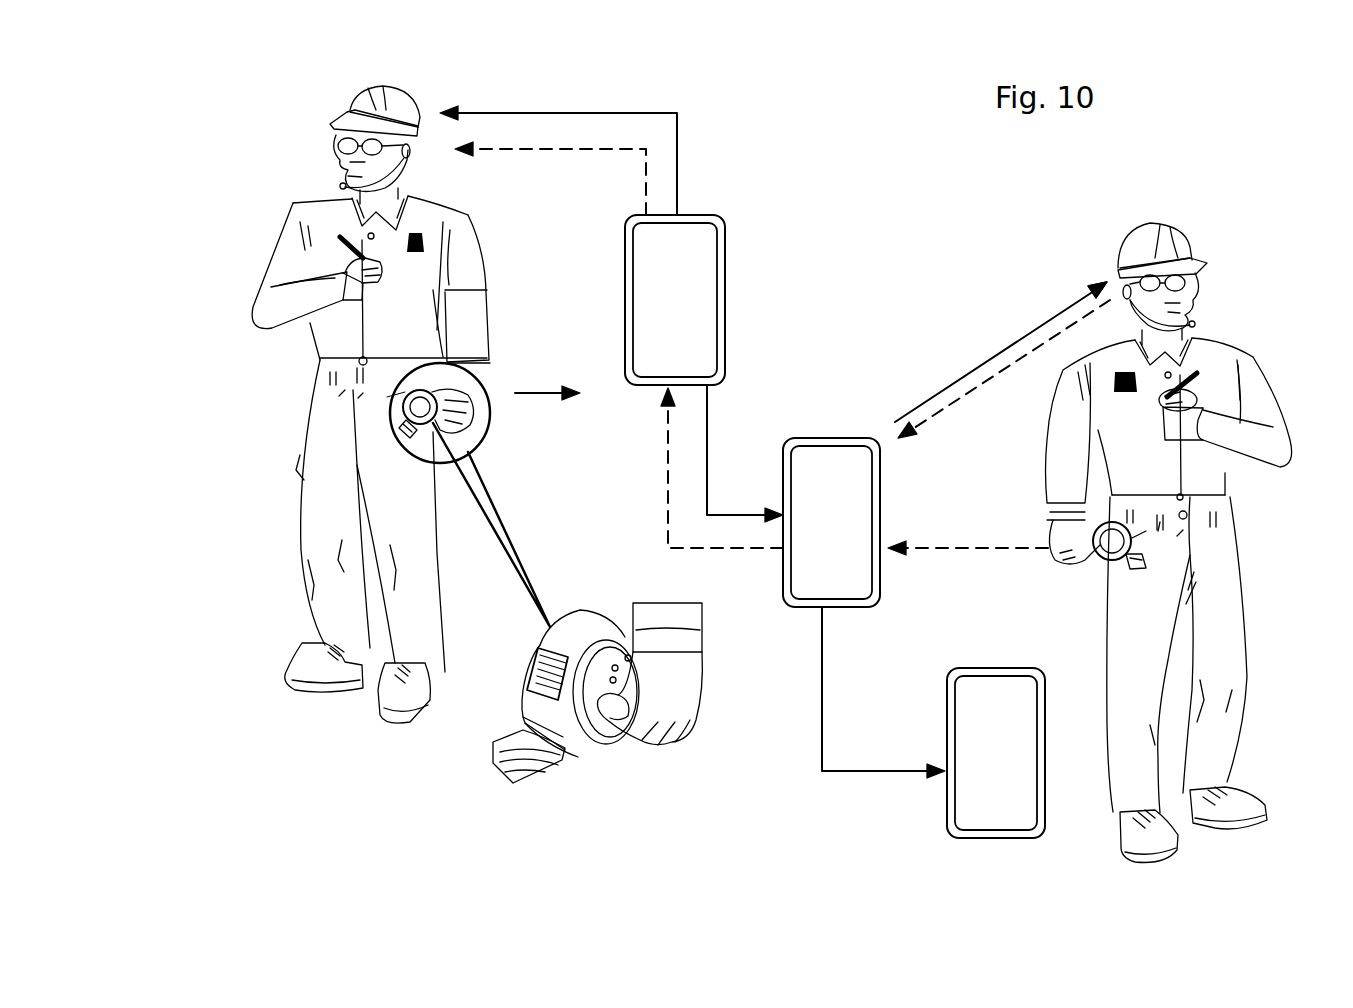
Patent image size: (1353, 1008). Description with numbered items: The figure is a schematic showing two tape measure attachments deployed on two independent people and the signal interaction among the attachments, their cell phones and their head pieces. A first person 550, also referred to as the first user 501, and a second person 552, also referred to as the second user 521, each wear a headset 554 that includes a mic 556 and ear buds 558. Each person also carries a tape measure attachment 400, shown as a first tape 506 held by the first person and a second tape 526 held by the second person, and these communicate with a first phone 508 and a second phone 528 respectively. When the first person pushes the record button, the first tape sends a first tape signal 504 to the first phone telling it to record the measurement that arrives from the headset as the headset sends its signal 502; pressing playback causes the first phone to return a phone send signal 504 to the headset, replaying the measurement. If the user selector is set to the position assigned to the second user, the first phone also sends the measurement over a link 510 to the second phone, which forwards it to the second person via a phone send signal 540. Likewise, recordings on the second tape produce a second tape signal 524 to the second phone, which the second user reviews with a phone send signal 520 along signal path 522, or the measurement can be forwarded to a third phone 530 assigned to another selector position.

The tape measure attachment 400 is at (407, 410).
The first user 501 is at (467, 252).
The headset signal 502 is at (680, 136).
The first tape signal / phone send signal 504 is at (562, 113).
The first tape 506 is at (435, 424).
The first phone 508 is at (708, 300).
The phone-to-phone link 510 is at (709, 440).
The phone send signal 520 is at (973, 393).
The second user 521 is at (1223, 477).
The signal path 522 is at (897, 420).
The second tape signal 524 is at (970, 552).
The second tape 526 is at (1110, 563).
The second phone 528 is at (882, 512).
The third phone 530 is at (957, 828).
The phone send signal 540 is at (1073, 300).
The first person 550 is at (267, 310).
The second person 552 is at (1253, 388).
The headset 554 is at (313, 150).
The mic 556 is at (340, 187).
The ear buds 558 is at (427, 123).